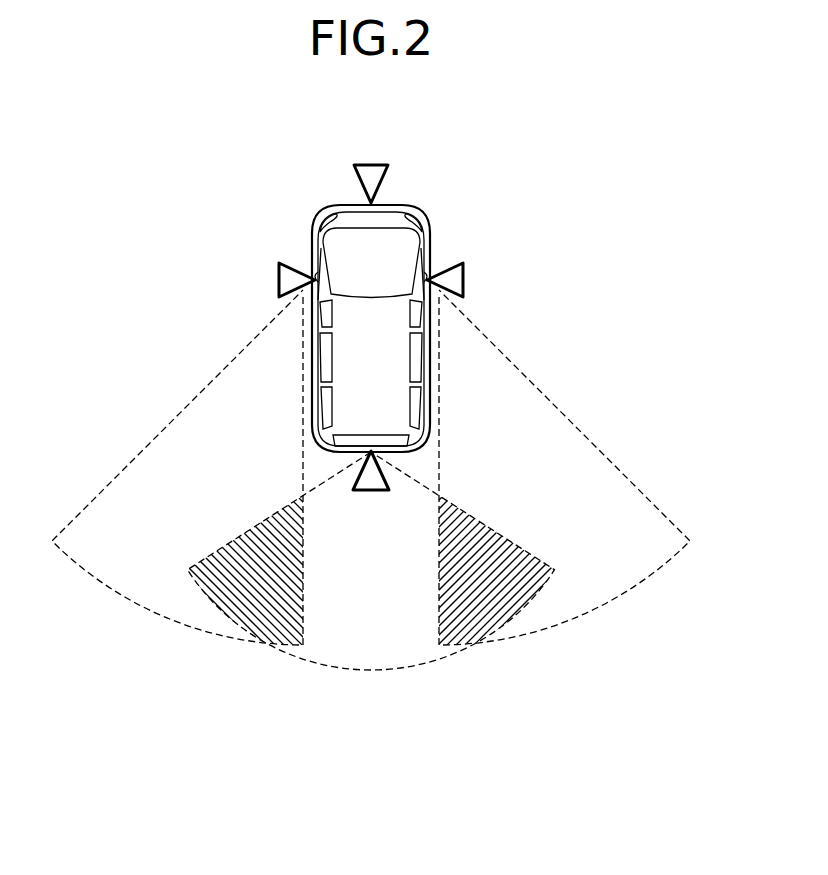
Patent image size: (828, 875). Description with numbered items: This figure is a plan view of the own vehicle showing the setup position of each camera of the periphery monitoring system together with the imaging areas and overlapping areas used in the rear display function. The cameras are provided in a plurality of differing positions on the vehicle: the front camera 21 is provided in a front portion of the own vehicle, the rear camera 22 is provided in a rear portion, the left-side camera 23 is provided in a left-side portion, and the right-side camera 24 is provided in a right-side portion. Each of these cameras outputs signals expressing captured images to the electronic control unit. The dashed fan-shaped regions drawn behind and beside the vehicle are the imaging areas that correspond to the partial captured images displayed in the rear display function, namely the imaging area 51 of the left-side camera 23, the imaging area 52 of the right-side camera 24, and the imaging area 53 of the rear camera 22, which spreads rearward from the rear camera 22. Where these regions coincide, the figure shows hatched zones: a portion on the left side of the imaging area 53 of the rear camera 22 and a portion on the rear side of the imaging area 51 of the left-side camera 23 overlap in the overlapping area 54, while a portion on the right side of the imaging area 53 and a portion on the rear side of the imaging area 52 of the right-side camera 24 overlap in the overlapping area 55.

The front camera 21 is at (366, 165).
The rear camera 22 is at (371, 492).
The left-side camera 23 is at (278, 279).
The right-side camera 24 is at (465, 279).
The imaging area of the left-side camera 51 is at (152, 441).
The imaging area of the right-side camera 52 is at (583, 426).
The imaging area of the rear camera 53 is at (386, 672).
The overlapping area 54 is at (230, 597).
The overlapping area 55 is at (503, 605).